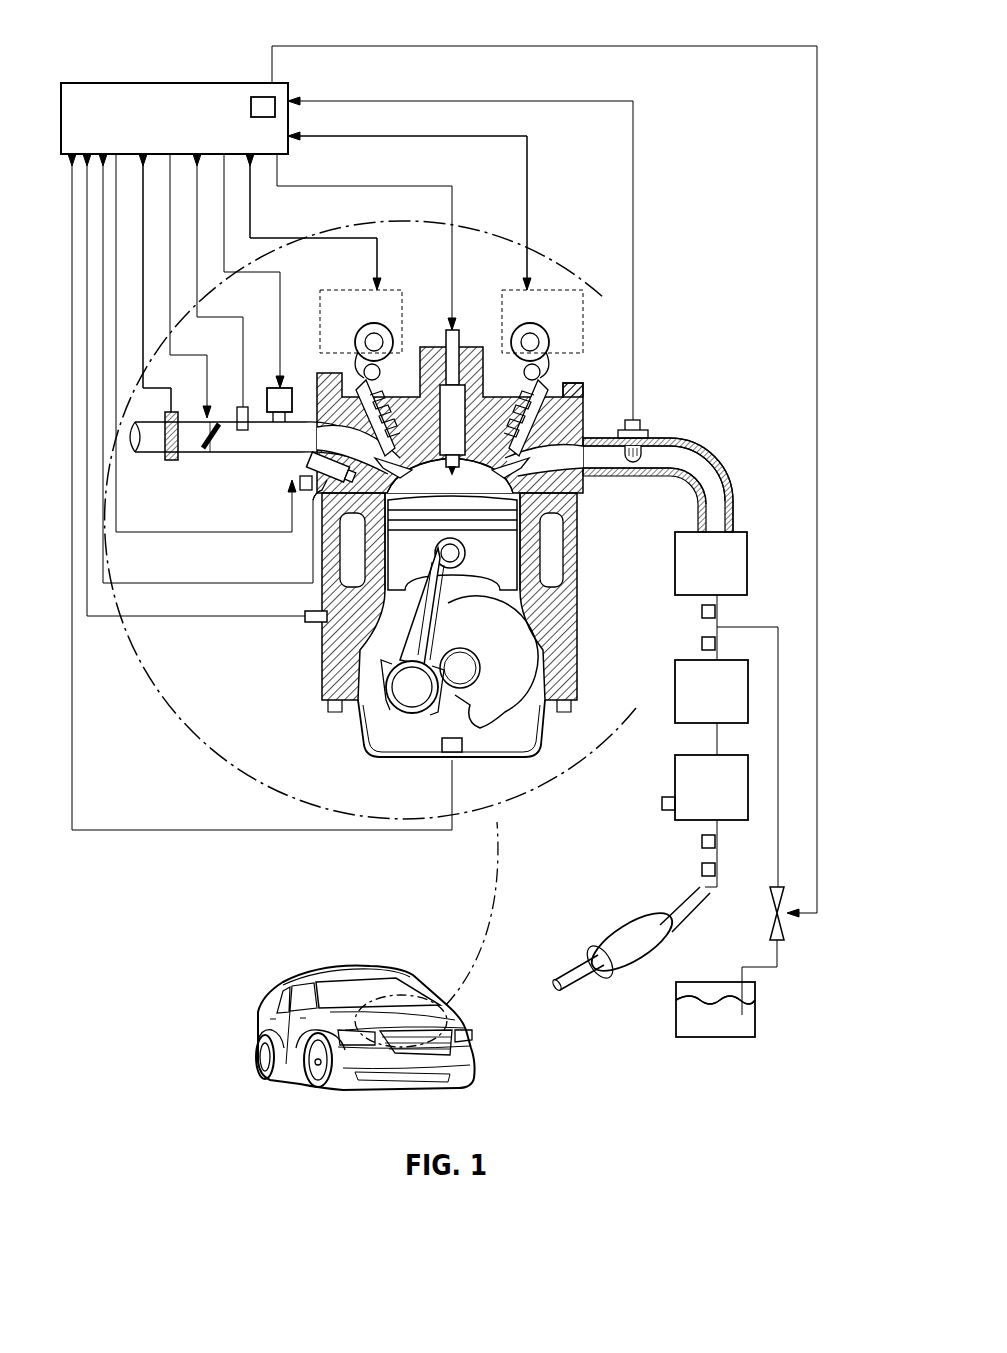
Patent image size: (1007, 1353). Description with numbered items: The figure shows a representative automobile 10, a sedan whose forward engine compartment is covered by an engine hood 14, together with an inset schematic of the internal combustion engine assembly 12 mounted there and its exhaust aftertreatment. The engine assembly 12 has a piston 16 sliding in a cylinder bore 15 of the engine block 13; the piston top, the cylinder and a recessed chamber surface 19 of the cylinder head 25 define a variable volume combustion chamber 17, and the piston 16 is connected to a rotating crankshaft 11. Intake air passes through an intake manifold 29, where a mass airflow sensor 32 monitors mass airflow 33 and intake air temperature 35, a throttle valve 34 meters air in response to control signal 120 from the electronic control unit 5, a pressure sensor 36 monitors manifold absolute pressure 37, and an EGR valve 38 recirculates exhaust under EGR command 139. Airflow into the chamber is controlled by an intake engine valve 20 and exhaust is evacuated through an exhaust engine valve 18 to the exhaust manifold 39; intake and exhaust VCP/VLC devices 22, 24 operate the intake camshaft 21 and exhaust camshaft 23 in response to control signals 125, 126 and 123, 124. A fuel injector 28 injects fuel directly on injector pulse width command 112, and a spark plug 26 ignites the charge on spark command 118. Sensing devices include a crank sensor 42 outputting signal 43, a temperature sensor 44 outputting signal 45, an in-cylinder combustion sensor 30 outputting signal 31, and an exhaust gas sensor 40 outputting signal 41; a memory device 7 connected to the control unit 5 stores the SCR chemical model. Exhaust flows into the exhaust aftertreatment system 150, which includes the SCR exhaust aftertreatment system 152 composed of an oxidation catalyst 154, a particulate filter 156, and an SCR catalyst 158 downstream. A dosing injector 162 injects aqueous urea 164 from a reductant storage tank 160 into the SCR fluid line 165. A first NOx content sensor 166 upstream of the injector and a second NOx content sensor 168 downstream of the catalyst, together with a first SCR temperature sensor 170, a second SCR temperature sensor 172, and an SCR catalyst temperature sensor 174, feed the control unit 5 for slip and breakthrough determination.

The programmable electronic control unit 5 is at (162, 134).
The memory device 7 is at (260, 97).
The automobile 10 is at (348, 955).
The crankshaft 11 is at (497, 708).
The internal combustion engine assembly 12 is at (157, 70).
The engine block 13 is at (565, 678).
The engine hood 14 is at (445, 1022).
The cylinder bore 15 is at (520, 520).
The piston 16 is at (510, 540).
The combustion chamber 17 is at (438, 494).
The exhaust engine valve 18 is at (600, 470).
The recessed chamber surface 19 is at (530, 513).
The intake engine valve 20 is at (292, 448).
The intake camshaft 21 is at (355, 345).
The intake variable cam phasing/variable lift control device 22 is at (364, 316).
The exhaust camshaft 23 is at (548, 345).
The exhaust variable cam phasing/variable lift control device 24 is at (562, 316).
The cylinder head 25 is at (578, 398).
The spark plug 26 is at (452, 330).
The fuel injector 28 is at (300, 480).
The intake manifold 29 is at (330, 398).
The in-cylinder combustion sensor 30 is at (304, 492).
The combustion sensor signal 31 is at (212, 581).
The mass airflow sensor 32 is at (175, 460).
The mass airflow 33 is at (207, 388).
The throttle valve 34 is at (212, 448).
The intake air temperature 35 is at (157, 283).
The pressure sensor 36 is at (240, 406).
The manifold absolute pressure 37 is at (251, 316).
The exhaust gas recirculation valve 38 is at (268, 388).
The exhaust manifold 39 is at (602, 438).
The exhaust gas sensor 40 is at (640, 430).
The exhaust gas sensor signal 41 is at (614, 100).
The crank sensor 42 is at (462, 752).
The crank angle/speed signal 43 is at (219, 828).
The temperature sensor 44 is at (312, 623).
The temperature signal 45 is at (254, 616).
The injector pulse width command 112 is at (185, 530).
The spark command 118 is at (457, 183).
The throttle control signal 120 is at (225, 355).
The exhaust valve lift control signal 123 is at (551, 133).
The exhaust cam phasing control signal 124 is at (408, 212).
The intake valve lift control signal 125 is at (361, 237).
The intake cam phasing control signal 126 is at (313, 221).
The EGR command 139 is at (317, 273).
The exhaust aftertreatment system 150 is at (712, 385).
The selective catalytic reduction exhaust aftertreatment system 152 is at (805, 1050).
The oxidation catalyst 154 is at (675, 578).
The particulate filter 156 is at (675, 695).
The SCR catalyst 158 is at (675, 768).
The reductant storage tank 160 is at (676, 990).
The dosing injector 162 is at (785, 930).
The aqueous urea 164 is at (712, 1025).
The SCR fluid line 165 is at (778, 878).
The first NOx content sensor 166 is at (702, 611).
The second NOx content sensor 168 is at (702, 841).
The first SCR temperature sensor 170 is at (702, 643).
The second SCR temperature sensor 172 is at (702, 869).
The SCR catalyst temperature sensor 174 is at (662, 803).